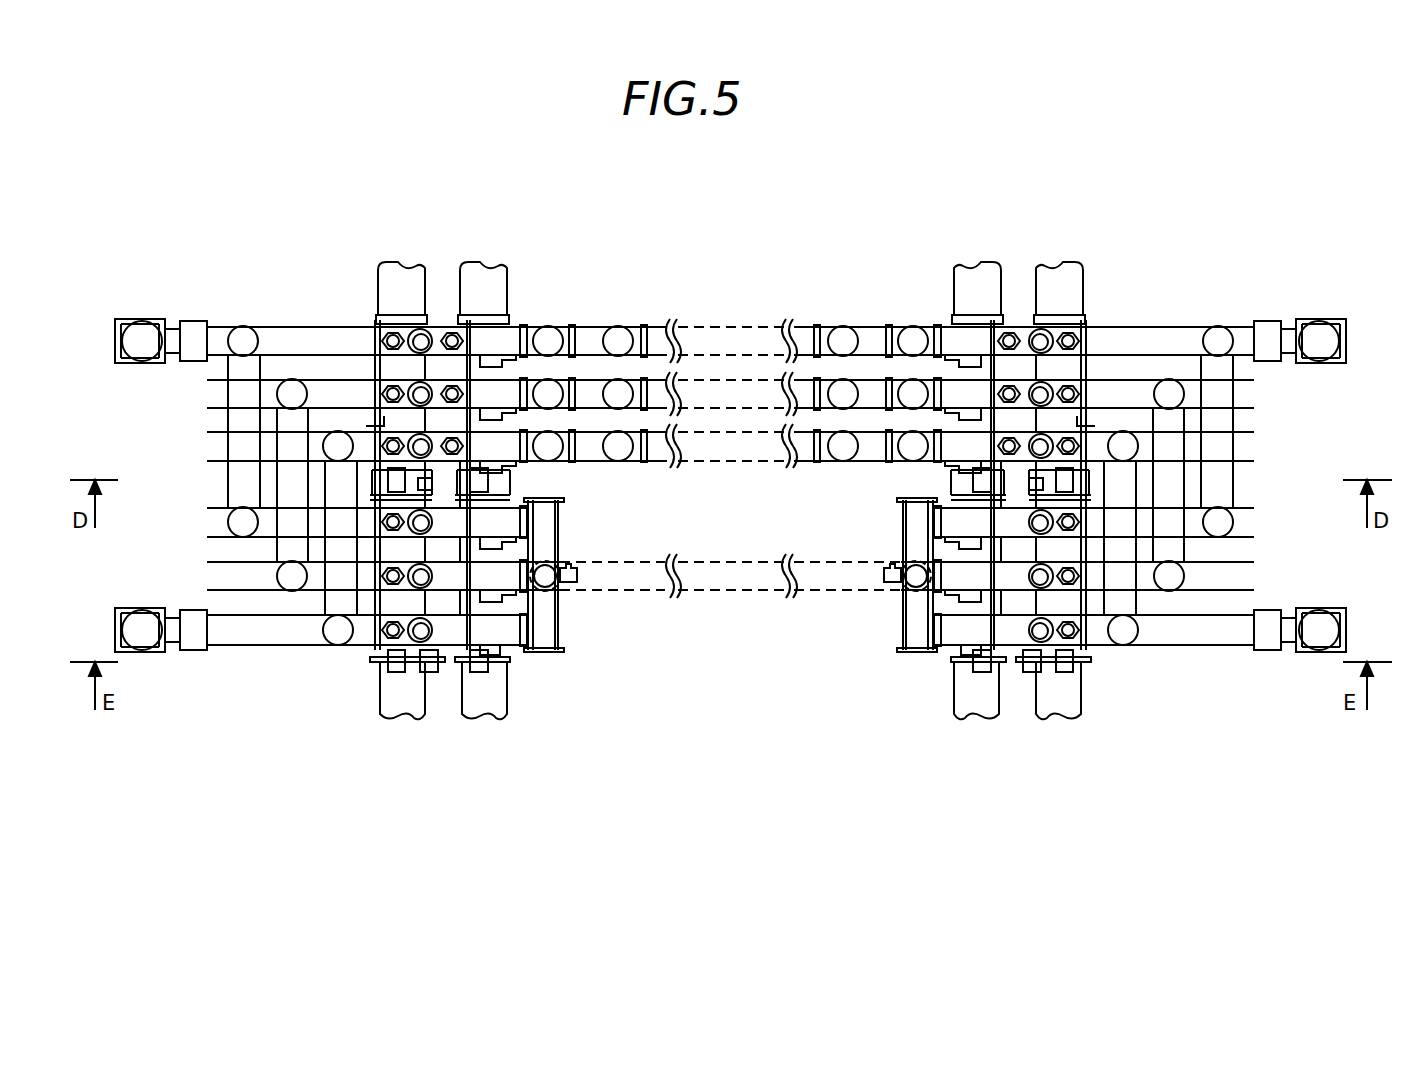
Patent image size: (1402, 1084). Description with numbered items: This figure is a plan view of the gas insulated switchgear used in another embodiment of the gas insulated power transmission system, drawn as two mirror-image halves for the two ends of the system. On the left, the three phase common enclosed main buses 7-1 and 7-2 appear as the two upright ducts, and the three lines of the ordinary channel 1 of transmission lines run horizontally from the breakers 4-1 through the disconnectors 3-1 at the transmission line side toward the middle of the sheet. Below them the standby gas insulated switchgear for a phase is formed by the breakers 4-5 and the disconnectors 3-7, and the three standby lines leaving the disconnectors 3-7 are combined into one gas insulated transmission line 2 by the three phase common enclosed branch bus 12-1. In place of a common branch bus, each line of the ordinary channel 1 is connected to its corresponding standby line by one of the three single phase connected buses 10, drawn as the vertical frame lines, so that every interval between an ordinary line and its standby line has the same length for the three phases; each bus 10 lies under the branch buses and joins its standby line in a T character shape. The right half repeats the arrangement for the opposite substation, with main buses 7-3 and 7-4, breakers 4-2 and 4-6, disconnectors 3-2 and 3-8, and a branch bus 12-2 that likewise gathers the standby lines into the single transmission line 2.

The gas insulated transmission lines (ordinary channel) 1 is at (733, 327).
The gas insulated transmission line 2 is at (740, 578).
The disconnectors at the transmission line side 3-1 is at (430, 326).
The connector unit 3-2 is at (1031, 326).
The disconnectors in the standby gas insulated switchgear 3-7 is at (430, 638).
The connector unit 3-8 is at (1031, 638).
The breakers 4-1 is at (142, 320).
The terminal block 4-2 is at (1319, 320).
The breakers in the standby gas insulated switchgear 4-5 is at (143, 642).
The terminal block 4-6 is at (1318, 642).
The three phase common enclosed main bus 7-1 is at (394, 274).
The three phase common enclosed main bus 7-2 is at (491, 274).
The cable duct 7-3 is at (970, 274).
The cable duct 7-4 is at (1067, 274).
The single phase connected buses 10 is at (228, 480).
The three phase common enclosed branch bus 12-1 is at (560, 532).
The coupling bracket 12-2 is at (901, 532).